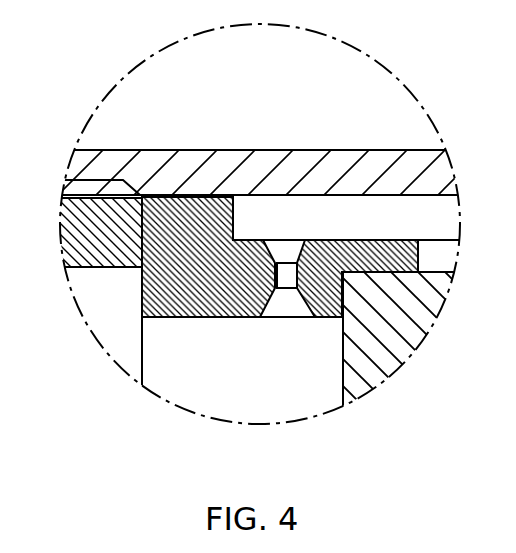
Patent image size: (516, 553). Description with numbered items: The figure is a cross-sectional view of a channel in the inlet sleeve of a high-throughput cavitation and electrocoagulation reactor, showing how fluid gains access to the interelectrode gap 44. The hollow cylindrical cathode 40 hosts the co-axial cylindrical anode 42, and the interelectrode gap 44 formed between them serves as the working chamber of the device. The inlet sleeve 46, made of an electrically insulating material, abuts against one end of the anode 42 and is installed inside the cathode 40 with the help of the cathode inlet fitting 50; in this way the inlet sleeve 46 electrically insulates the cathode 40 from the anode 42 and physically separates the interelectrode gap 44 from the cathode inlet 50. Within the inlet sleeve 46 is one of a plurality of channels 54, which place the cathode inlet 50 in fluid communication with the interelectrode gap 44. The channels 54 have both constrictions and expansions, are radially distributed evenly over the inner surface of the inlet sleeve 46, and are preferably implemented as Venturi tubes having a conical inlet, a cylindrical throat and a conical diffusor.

The hollow cylindrical cathode 40 is at (260, 150).
The cylindrical anode 42 is at (398, 345).
The interelectrode gap 44 is at (383, 208).
The inlet sleeve 46 is at (180, 205).
The cathode inlet fitting 50 is at (92, 250).
The channels 54 is at (283, 307).